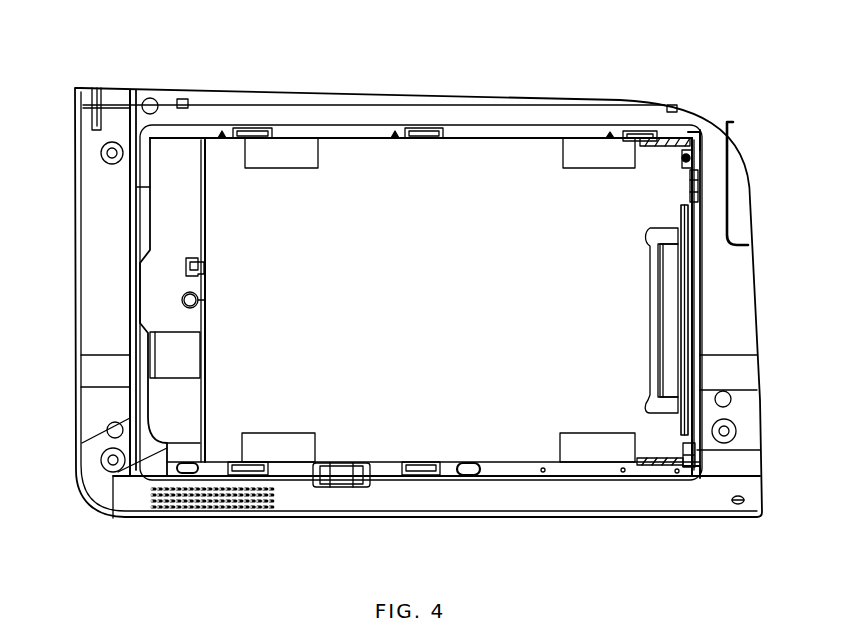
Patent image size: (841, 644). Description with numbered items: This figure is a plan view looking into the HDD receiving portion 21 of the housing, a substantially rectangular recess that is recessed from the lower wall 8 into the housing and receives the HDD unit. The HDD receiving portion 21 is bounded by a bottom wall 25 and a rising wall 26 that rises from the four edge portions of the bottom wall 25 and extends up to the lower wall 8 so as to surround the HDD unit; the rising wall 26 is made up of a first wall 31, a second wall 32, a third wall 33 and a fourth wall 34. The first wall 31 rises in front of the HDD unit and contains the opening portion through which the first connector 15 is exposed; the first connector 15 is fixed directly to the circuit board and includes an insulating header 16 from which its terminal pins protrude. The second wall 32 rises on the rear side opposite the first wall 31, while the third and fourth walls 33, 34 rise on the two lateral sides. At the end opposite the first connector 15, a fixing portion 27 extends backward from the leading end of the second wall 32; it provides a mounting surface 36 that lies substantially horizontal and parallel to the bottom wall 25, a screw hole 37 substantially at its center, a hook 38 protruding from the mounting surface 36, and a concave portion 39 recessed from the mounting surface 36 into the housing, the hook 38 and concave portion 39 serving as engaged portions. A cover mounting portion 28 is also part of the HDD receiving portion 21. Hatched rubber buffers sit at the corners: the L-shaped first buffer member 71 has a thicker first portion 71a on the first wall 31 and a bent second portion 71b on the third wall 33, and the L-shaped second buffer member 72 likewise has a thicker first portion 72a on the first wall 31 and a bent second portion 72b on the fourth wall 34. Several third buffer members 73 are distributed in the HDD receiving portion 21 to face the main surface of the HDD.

The lower wall 8 is at (562, 117).
The first connector 15 is at (660, 322).
The header 16 is at (660, 272).
The HDD receiving portion 21 is at (486, 168).
The bottom wall 25 is at (385, 177).
The rising wall 26 is at (493, 457).
The fixing portion 27 is at (162, 225).
The cover mounting portion 28 is at (305, 135).
The first wall 31 is at (688, 192).
The second wall 32 is at (206, 232).
The third wall 33 is at (350, 145).
The fourth wall 34 is at (390, 460).
The mounting surface 36 is at (205, 188).
The screw hole 37 is at (199, 301).
The hook 38 is at (200, 266).
The concave portion 39 is at (185, 340).
The first buffer member 71 is at (677, 130).
The first portion 71a is at (683, 160).
The second portion 71b is at (648, 131).
The second buffer member 72 is at (669, 477).
The first portion 72a is at (681, 452).
The second portion 72b is at (640, 466).
The third buffer member 73 is at (296, 160).